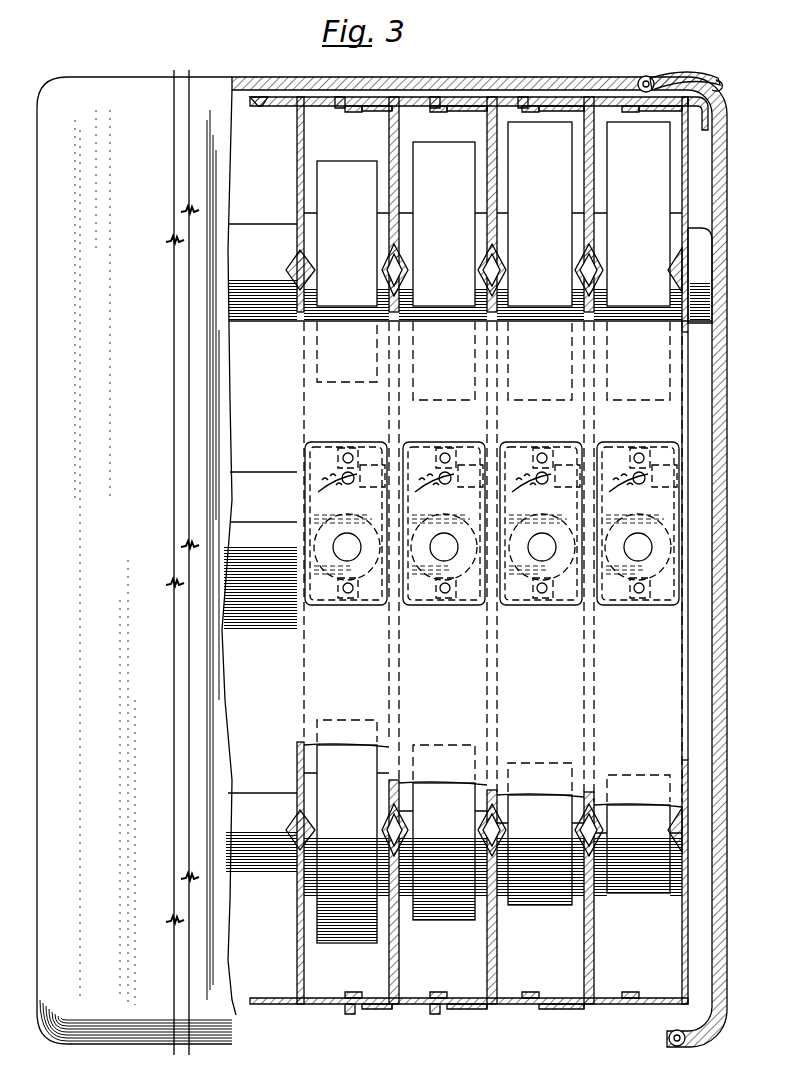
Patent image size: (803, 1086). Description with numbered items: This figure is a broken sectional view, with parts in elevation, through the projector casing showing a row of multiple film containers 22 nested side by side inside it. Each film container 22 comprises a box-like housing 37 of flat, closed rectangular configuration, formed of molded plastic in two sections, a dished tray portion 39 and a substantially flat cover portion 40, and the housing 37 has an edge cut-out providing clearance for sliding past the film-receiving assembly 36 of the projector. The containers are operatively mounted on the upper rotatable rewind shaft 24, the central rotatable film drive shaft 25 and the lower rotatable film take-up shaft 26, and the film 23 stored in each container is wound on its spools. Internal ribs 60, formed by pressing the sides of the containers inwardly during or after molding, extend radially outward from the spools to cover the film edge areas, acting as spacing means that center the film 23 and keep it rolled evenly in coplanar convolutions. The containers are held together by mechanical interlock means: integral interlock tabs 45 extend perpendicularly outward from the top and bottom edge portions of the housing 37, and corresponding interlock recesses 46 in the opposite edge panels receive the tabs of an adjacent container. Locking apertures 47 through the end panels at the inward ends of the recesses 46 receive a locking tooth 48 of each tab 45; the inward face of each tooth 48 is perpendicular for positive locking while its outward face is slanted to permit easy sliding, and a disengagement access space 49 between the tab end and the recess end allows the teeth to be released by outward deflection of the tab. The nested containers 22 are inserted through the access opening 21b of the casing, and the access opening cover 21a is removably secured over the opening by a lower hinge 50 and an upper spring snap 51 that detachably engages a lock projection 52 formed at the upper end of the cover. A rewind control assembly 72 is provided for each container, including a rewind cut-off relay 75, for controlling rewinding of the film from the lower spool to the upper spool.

The access opening cover 21a is at (727, 975).
The access opening 21b is at (700, 103).
The multiple film containers 22 is at (298, 384).
The film 23 is at (358, 214).
The upper rotatable rewind shaft 24 is at (249, 238).
The central rotatable film drive shaft 25 is at (245, 532).
The lower rotatable film take-up shaft 26 is at (250, 804).
The film-receiving assembly 36 is at (248, 466).
The housing 37 is at (297, 152).
The dished tray portion 39 is at (389, 960).
The cover portion 40 is at (297, 939).
The interlock tabs 45 is at (381, 97).
The interlock recesses 46 is at (380, 112).
The locking apertures 47 is at (352, 112).
The locking tooth 48 is at (255, 110).
The disengagement access space 49 is at (348, 97).
The lower hinge 50 is at (682, 1046).
The upper spring snap 51 is at (652, 76).
The lock projection 52 is at (708, 80).
The internal ribs 60 is at (380, 270).
The rewind control assembly 72 is at (525, 618).
The rewind cut-off relay 75 is at (440, 540).